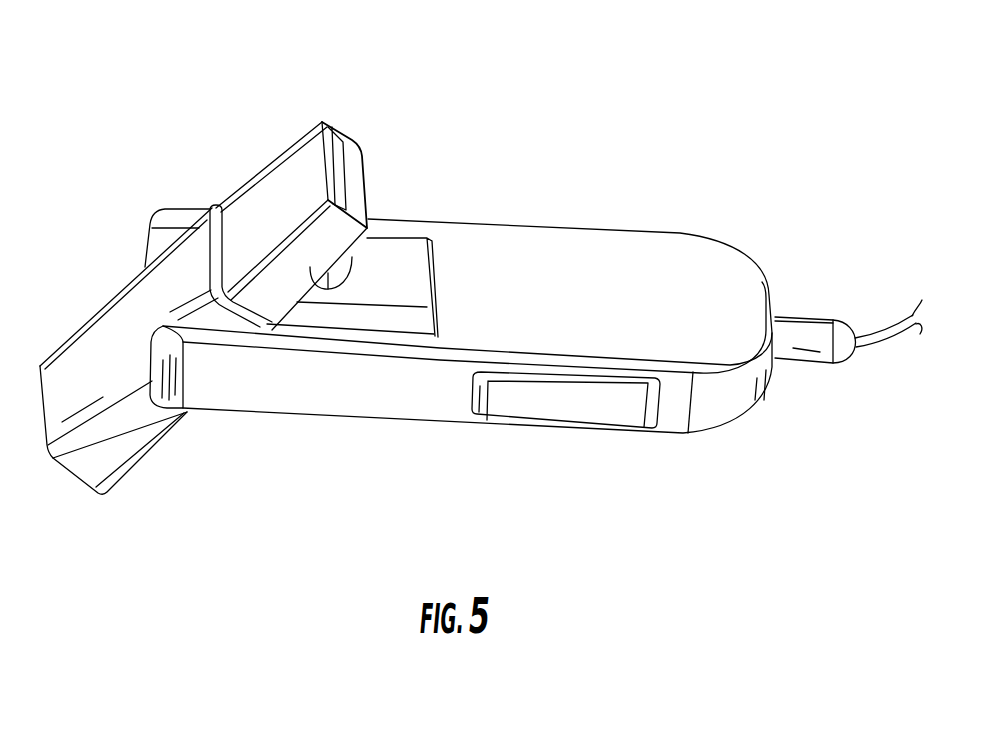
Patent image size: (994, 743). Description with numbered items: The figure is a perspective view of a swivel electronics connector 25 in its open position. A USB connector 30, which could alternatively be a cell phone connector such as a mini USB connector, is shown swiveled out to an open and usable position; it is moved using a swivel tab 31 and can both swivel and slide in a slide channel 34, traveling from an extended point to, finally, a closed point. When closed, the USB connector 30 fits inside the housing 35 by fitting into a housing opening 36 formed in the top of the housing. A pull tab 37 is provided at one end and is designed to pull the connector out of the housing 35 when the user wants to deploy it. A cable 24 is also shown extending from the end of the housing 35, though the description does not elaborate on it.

The power cable 24 is at (887, 330).
The swivel electronics connector 25 is at (567, 152).
The USB connector 30 is at (337, 160).
The swivel tab 31 is at (210, 383).
The slide channel 34 is at (343, 263).
The housing 35 is at (467, 292).
The housing opening 36 is at (422, 320).
The pull tab 37 is at (50, 453).